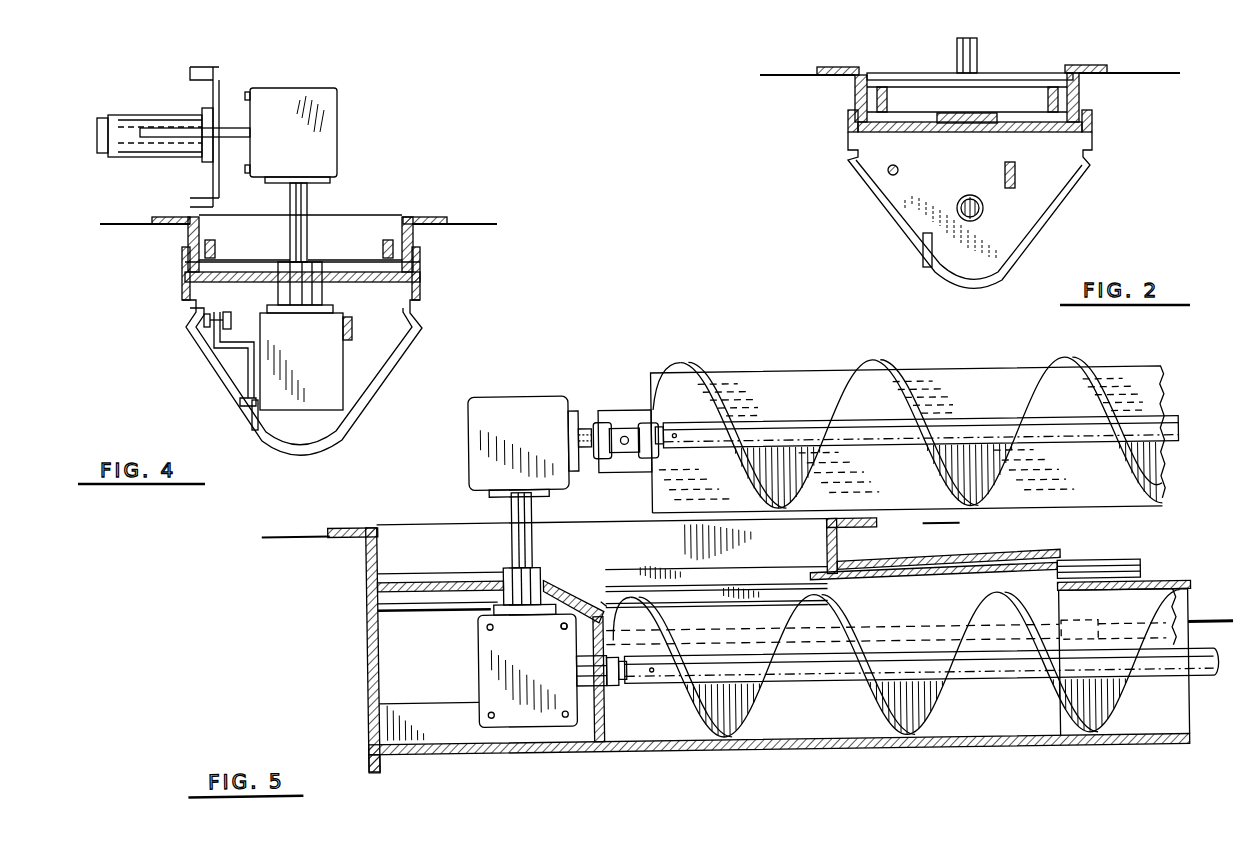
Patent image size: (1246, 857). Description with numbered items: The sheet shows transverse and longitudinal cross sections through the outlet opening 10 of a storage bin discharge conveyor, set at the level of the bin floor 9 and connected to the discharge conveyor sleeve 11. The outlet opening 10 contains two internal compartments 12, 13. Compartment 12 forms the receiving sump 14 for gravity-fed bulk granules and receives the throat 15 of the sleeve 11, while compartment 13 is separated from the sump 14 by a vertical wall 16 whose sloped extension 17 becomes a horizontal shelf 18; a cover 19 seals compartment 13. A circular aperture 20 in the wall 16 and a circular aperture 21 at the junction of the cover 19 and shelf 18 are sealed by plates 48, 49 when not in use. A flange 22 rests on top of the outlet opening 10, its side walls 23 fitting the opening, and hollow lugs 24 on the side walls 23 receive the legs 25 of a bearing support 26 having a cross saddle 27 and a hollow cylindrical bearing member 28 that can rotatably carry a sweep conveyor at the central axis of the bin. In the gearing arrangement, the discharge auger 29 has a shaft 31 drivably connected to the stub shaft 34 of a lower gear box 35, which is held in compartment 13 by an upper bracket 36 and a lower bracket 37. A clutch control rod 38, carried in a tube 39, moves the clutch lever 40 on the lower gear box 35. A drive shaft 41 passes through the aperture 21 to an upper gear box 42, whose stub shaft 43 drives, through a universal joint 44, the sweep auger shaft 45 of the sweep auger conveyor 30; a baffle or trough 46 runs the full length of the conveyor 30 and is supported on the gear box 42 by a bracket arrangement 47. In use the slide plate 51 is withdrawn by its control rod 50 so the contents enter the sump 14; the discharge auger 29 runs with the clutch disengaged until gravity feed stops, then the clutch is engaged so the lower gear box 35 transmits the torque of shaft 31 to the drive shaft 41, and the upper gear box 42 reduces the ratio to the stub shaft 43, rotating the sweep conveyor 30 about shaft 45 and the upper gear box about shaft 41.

In FIG. 4, the bin floor level 9 is at (112, 224).
In FIG. 2, the bin floor level 9 is at (768, 74).
In FIG. 5, the bin floor level 9 is at (280, 531).
In FIG. 4, the outlet opening 10 is at (402, 358).
In FIG. 2, the outlet opening 10 is at (1100, 168).
In FIG. 5, the discharge conveyor sleeve 11 is at (1160, 589).
In FIG. 5, the compartment 12 is at (822, 740).
In FIG. 4, the compartment 13 is at (368, 365).
In FIG. 2, the compartment 13 is at (1015, 240).
In FIG. 5, the receiving sump 14 is at (608, 539).
In FIG. 5, the throat 15 is at (1030, 582).
In FIG. 5, the vertical wall 16 is at (603, 726).
In FIG. 5, the sloped extension 17 is at (585, 594).
In FIG. 5, the horizontal shelf 18 is at (563, 576).
In FIG. 4, the cover 19 is at (245, 272).
In FIG. 2, the cover 19 is at (1022, 132).
In FIG. 5, the cover 19 is at (421, 580).
In FIG. 2, the circular aperture 20 is at (976, 216).
In FIG. 5, the circular aperture 20 is at (588, 666).
In FIG. 4, the circular aperture 21 is at (318, 288).
In FIG. 2, the circular aperture 21 is at (975, 132).
In FIG. 5, the circular aperture 21 is at (500, 596).
In FIG. 4, the flange 22 is at (162, 216).
In FIG. 2, the flange 22 is at (820, 66).
In FIG. 5, the flange 22 is at (350, 523).
In FIG. 2, the flange side walls 23 is at (852, 82).
In FIG. 5, the flange side walls 23 is at (380, 541).
In FIG. 4, the hollow lugs 24 is at (215, 242).
In FIG. 2, the hollow lugs 24 is at (890, 98).
In FIG. 2, the legs 25 is at (868, 66).
In FIG. 2, the bearing support 26 is at (985, 58).
In FIG. 2, the cross saddle 27 is at (928, 72).
In FIG. 2, the bearing member 28 is at (978, 40).
In FIG. 5, the discharge auger 29 is at (940, 727).
In FIG. 5, the sweep auger conveyor 30 is at (1055, 385).
In FIG. 5, the discharge auger shaft 31 is at (805, 668).
In FIG. 5, the stub shaft 34 is at (617, 680).
In FIG. 4, the lower gear box 35 is at (332, 387).
In FIG. 5, the lower gear box 35 is at (478, 657).
In FIG. 4, the upper bracket 36 is at (354, 333).
In FIG. 2, the upper bracket 36 is at (1004, 168).
In FIG. 4, the lower bracket 37 is at (250, 422).
In FIG. 2, the lower bracket 37 is at (932, 250).
In FIG. 5, the lower bracket 37 is at (400, 692).
In FIG. 4, the clutch control rod 38 is at (200, 320).
In FIG. 2, the clutch control rod 38 is at (898, 172).
In FIG. 5, the clutch control rod 38 is at (560, 623).
In FIG. 5, the clutch control rod tube 39 is at (697, 613).
In FIG. 4, the clutch lever 40 is at (237, 365).
In FIG. 4, the drive shaft 41 is at (309, 203).
In FIG. 5, the drive shaft 41 is at (510, 509).
In FIG. 4, the upper gear box 42 is at (327, 98).
In FIG. 5, the upper gear box 42 is at (548, 403).
In FIG. 5, the stub shaft 43 is at (590, 450).
In FIG. 5, the universal joint 44 is at (632, 415).
In FIG. 5, the sweep auger shaft 45 is at (1080, 448).
In FIG. 4, the baffle or trough means 46 is at (216, 67).
In FIG. 5, the baffle or trough means 46 is at (935, 390).
In FIG. 4, the bracket arrangement 47 is at (237, 135).
In FIG. 2, the plate 48 is at (982, 205).
In FIG. 2, the plate 49 is at (960, 123).
In FIG. 5, the slide plate control rod 50 is at (1120, 571).
In FIG. 5, the slide plate 51 is at (960, 562).